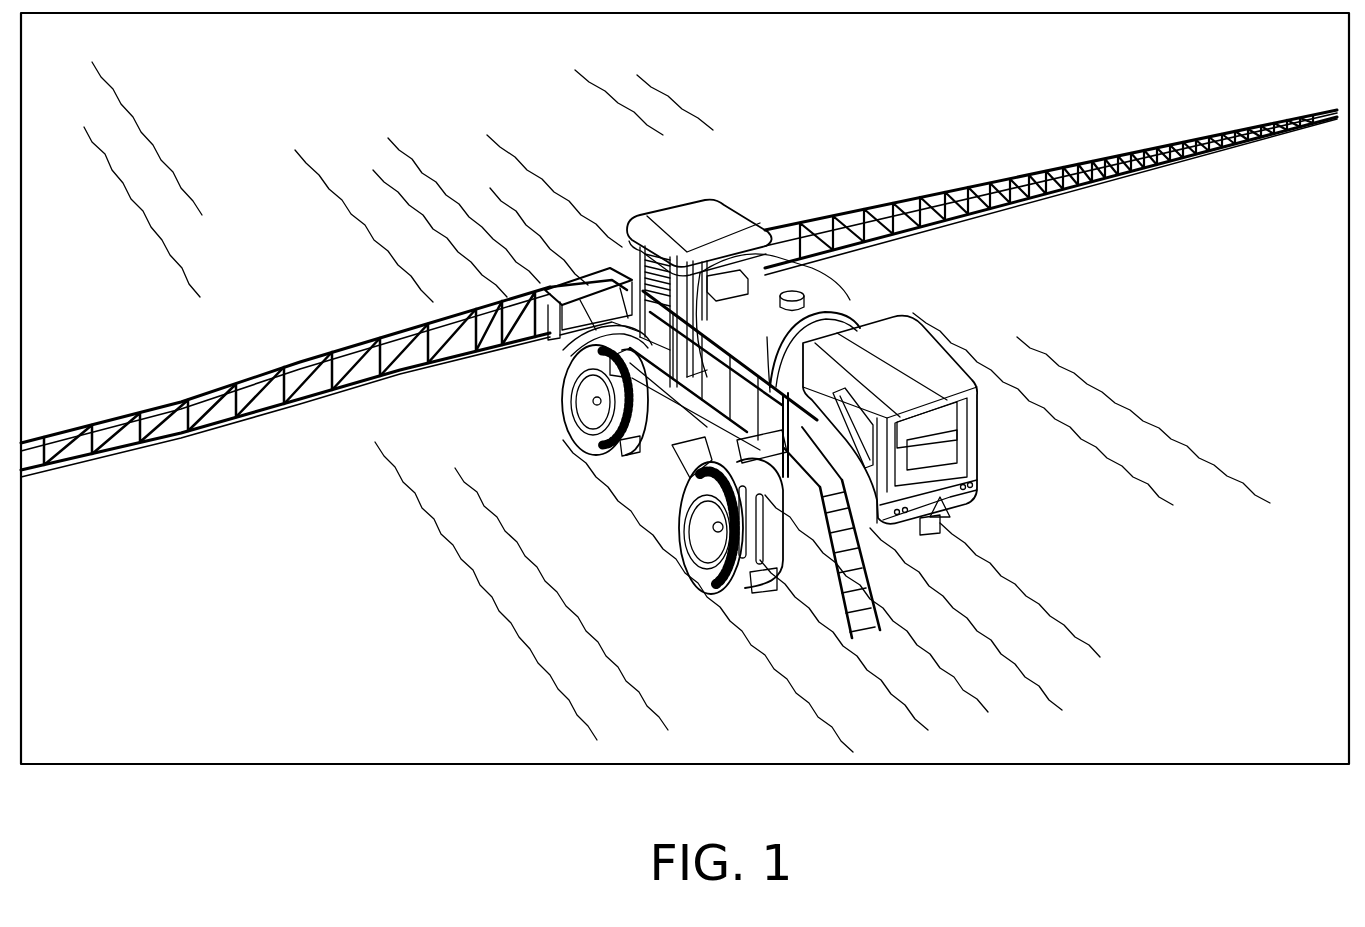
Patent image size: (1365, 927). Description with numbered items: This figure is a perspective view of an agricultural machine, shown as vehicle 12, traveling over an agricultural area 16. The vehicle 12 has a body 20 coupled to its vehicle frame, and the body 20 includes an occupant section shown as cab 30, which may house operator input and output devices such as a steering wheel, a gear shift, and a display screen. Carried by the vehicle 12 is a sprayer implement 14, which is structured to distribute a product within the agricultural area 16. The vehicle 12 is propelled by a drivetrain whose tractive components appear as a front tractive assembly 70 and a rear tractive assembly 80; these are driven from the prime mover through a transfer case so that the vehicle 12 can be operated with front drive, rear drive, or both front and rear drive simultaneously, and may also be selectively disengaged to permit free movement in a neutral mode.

The vehicle 12 is at (998, 344).
The sprayer implement 14 is at (1028, 175).
The agricultural area 16 is at (331, 112).
The body 20 is at (678, 220).
The cab 30 is at (635, 258).
The front tractive assembly 70 is at (592, 456).
The rear tractive assembly 80 is at (700, 537).